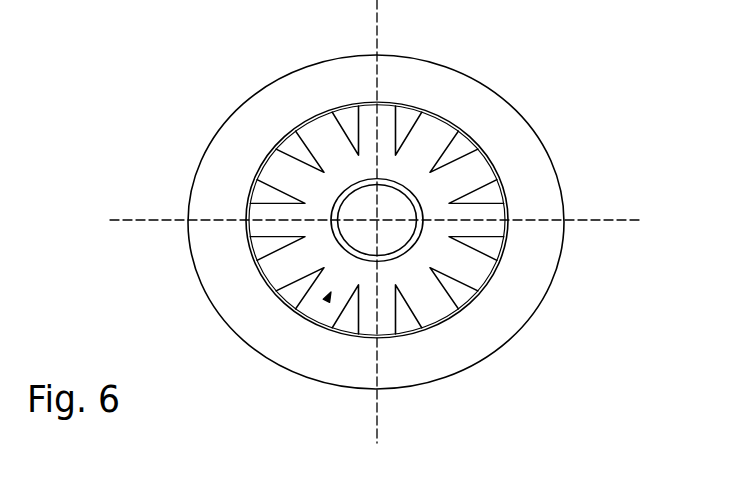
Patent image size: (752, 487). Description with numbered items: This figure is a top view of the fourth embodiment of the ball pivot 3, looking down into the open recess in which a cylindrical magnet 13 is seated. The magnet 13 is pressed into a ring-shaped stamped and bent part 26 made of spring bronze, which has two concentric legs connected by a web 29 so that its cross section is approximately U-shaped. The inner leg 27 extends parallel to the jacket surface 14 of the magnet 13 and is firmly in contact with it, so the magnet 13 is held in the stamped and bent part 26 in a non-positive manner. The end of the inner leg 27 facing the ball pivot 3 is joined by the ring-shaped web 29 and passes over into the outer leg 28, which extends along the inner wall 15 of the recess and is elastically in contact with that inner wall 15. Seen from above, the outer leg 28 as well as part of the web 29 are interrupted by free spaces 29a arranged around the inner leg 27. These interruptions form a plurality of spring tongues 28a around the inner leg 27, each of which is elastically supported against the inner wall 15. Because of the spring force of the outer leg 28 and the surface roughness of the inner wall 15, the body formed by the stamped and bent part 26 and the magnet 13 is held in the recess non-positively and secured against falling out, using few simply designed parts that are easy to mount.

The ball pivot 3 is at (495, 322).
The cylindrical magnet 13 is at (397, 238).
The jacket surface 14 is at (281, 138).
The inner wall 15 is at (505, 193).
The stamped and bent part 26 is at (328, 298).
The inner leg 27 is at (333, 239).
The outer leg 28 is at (257, 165).
The spring tongues 28a is at (430, 303).
The web 29 is at (437, 185).
The free spaces 29a is at (458, 148).